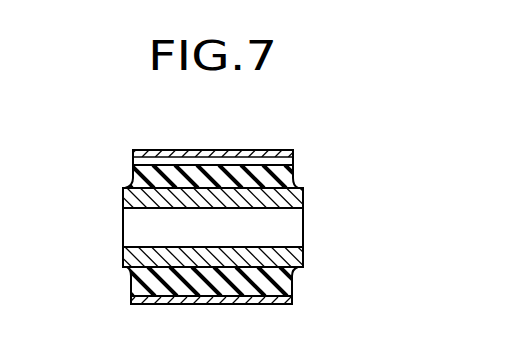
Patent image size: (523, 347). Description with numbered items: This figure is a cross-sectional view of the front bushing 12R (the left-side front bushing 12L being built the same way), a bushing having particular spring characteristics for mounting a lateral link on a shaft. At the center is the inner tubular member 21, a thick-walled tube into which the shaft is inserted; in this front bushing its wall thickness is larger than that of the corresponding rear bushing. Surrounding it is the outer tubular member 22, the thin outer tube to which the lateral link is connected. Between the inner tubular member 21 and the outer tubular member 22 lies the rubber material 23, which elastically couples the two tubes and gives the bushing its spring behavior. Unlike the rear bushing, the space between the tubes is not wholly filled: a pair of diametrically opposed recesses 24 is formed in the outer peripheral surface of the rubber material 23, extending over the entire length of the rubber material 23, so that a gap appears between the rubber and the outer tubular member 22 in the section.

The front bushing 12R is at (265, 142).
The front bushing 12L is at (213, 157).
The inner tubular member 21 is at (303, 257).
The outer tubular member 22 is at (267, 304).
The rubber material 23 is at (222, 285).
The recesses 24 is at (210, 164).